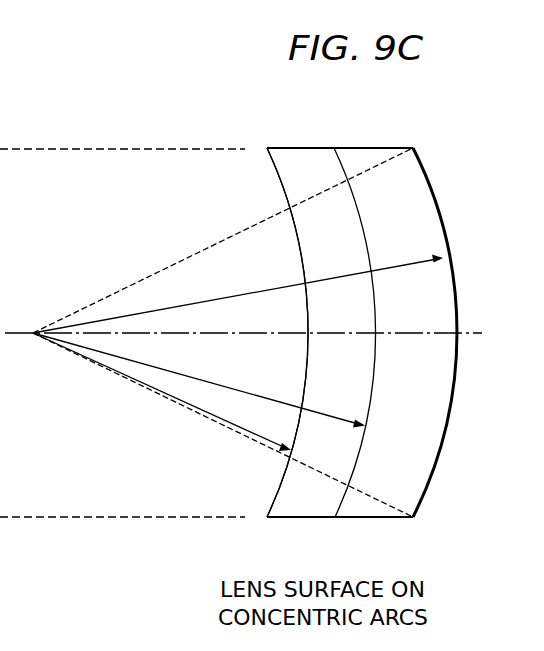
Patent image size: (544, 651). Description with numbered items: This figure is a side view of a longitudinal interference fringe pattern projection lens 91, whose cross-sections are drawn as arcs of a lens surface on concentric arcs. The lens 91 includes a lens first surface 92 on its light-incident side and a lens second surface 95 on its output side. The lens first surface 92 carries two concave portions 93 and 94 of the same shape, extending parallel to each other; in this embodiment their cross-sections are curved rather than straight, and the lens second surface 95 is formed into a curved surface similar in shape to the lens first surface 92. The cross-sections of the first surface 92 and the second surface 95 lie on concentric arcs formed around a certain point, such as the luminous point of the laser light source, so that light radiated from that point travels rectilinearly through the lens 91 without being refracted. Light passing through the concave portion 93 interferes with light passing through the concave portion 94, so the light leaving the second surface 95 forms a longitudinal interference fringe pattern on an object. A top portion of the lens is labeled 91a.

The longitudinal interference fringe pattern projection lens 91 is at (409, 534).
The lens top surface 91a is at (372, 148).
The lens first surface 92 is at (338, 500).
The concave portion 93 is at (277, 518).
The concave portion 94 is at (291, 359).
The lens second surface 95 is at (437, 457).